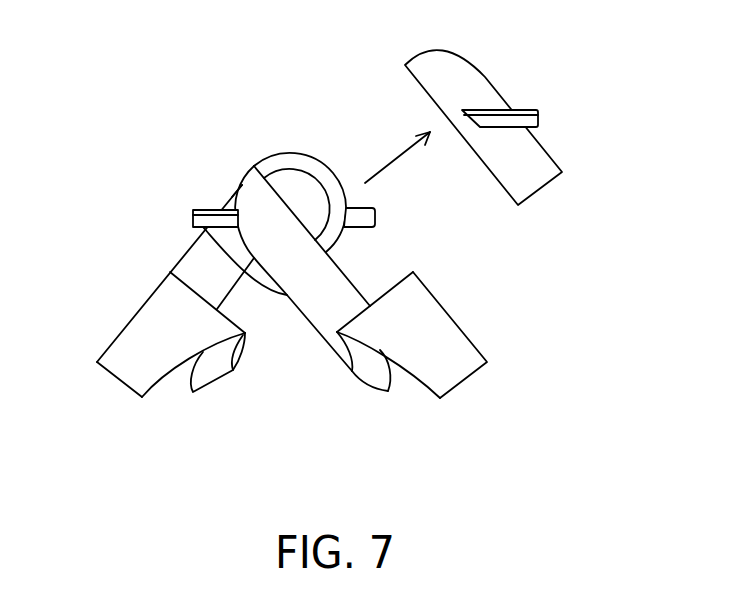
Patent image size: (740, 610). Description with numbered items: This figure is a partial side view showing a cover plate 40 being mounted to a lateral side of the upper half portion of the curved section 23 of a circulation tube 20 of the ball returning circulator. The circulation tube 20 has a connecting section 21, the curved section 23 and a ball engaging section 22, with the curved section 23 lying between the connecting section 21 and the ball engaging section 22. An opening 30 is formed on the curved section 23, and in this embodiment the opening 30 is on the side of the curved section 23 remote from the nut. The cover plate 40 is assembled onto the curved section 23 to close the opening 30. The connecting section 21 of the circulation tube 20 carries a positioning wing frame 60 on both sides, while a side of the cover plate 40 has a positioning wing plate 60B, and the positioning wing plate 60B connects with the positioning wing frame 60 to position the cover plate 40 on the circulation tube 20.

The circulation tube 20 is at (211, 139).
The connecting section 21 is at (300, 162).
The ball engaging section 22 is at (147, 300).
The curved section 23 is at (243, 188).
The opening 30 is at (348, 270).
The cover plate 40 is at (485, 76).
The positioning wing frame 60 is at (193, 214).
The positioning wing plate 60B is at (532, 109).